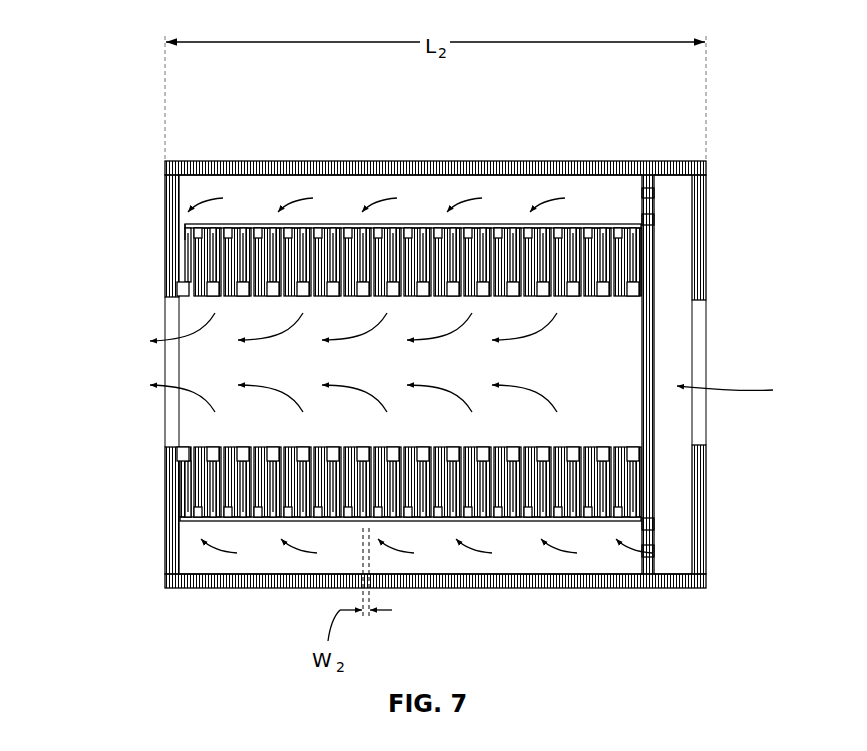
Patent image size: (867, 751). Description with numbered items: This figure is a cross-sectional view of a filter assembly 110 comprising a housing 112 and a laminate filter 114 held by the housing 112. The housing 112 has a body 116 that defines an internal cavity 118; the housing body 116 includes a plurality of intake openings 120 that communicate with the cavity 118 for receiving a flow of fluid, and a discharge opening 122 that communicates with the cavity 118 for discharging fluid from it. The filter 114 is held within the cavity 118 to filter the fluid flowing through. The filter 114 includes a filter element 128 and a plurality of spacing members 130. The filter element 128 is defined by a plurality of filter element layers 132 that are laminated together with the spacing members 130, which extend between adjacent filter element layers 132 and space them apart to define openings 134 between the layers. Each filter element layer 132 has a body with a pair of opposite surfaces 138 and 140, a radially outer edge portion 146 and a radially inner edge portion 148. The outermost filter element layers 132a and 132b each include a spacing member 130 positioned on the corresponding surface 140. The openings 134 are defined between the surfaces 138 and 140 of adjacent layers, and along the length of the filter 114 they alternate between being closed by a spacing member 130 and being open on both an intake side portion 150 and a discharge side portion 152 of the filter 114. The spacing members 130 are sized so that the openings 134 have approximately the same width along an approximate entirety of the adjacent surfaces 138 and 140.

The filter assembly 110 is at (100, 31).
The housing 112 is at (670, 589).
The laminate filter 114 is at (232, 217).
The body 116 is at (180, 592).
The internal cavity 118 is at (466, 558).
The intake openings 120 is at (654, 193).
The discharge opening 122 is at (172, 448).
The filter element 128 is at (621, 314).
The spacing members 130 is at (428, 378).
The filter element layers 132 is at (650, 426).
The outermost filter element layer 132a is at (636, 305).
The outermost filter element layer 132b is at (184, 236).
The openings 134 is at (616, 452).
The surface 138 is at (618, 262).
The surface 140 is at (607, 277).
The radially outer edge portion 146 is at (194, 530).
The radially inner edge portion 148 is at (198, 444).
The intake side portion 150 is at (423, 197).
The discharge side portion 152 is at (200, 348).